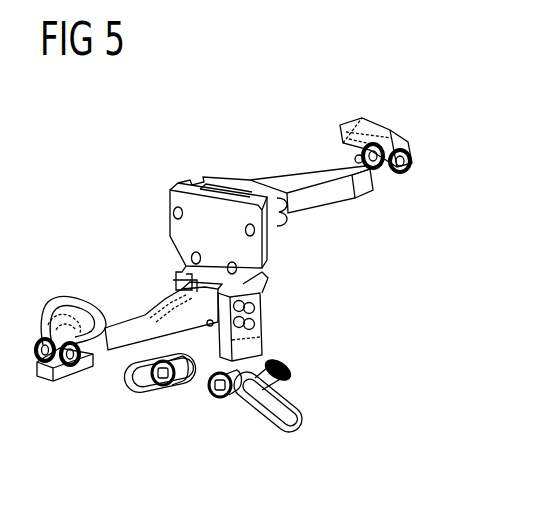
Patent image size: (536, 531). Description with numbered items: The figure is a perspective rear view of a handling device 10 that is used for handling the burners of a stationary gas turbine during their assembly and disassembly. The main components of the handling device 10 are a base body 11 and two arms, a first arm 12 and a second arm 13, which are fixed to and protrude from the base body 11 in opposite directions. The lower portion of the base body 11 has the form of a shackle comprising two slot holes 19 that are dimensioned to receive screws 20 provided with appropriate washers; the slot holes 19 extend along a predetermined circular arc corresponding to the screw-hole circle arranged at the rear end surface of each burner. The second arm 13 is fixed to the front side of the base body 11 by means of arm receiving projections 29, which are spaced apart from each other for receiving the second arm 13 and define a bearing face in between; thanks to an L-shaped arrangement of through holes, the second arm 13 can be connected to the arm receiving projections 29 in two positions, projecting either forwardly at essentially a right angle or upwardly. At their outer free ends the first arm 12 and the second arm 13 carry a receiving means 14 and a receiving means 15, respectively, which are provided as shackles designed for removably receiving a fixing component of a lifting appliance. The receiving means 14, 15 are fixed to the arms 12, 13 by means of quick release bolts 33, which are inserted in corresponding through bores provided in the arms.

The handling device 10 is at (426, 97).
The base body 11 is at (165, 179).
The first arm 12 is at (305, 177).
The second arm 13 is at (130, 323).
The receiving means 14 is at (365, 128).
The receiving means 15 is at (73, 298).
The slot holes 19 is at (151, 394).
The screws 20 is at (187, 390).
The arm receiving projections 29 is at (176, 285).
The quick release bolts 33 is at (416, 165).